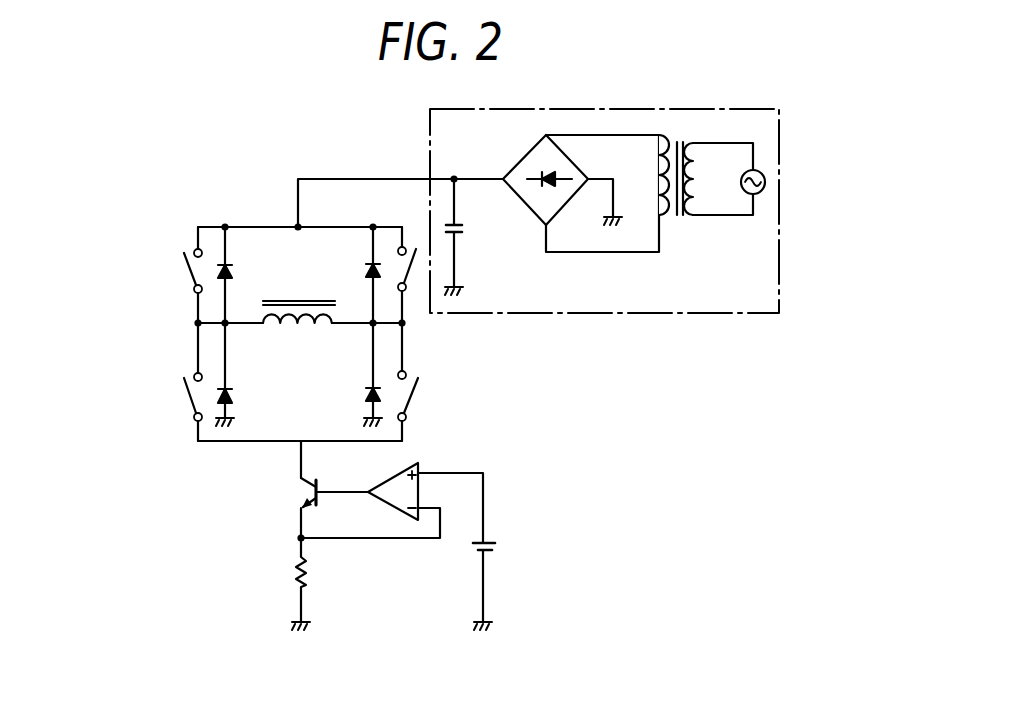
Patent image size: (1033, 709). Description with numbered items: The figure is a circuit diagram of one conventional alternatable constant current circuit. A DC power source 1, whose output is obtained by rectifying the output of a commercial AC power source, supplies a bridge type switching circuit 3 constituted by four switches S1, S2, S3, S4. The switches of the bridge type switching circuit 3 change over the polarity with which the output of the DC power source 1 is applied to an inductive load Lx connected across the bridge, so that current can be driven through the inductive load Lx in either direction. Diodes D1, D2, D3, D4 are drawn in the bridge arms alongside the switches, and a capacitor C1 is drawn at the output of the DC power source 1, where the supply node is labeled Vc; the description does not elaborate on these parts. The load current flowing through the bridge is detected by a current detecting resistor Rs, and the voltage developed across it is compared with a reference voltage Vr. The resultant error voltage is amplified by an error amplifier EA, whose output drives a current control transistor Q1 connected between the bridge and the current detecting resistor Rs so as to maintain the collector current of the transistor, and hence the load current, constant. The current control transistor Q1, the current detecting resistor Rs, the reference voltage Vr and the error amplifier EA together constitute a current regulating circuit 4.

The DC power source 1 is at (660, 108).
The bridge type switching circuit 3 is at (154, 333).
The current regulating circuit 4 is at (250, 520).
The switch S1 is at (181, 272).
The switch S2 is at (181, 394).
The switch S3 is at (414, 246).
The switch S4 is at (421, 378).
The diode D1 is at (240, 271).
The diode D2 is at (238, 389).
The diode D3 is at (356, 269).
The diode D4 is at (362, 398).
The inductive load Lx is at (277, 326).
The capacitor C1 is at (467, 237).
The current control transistor Q1 is at (299, 491).
The error amplifier EA is at (391, 476).
The current detecting resistor Rs is at (313, 584).
The reference voltage Vr is at (498, 545).
The supply voltage node Vc is at (400, 190).